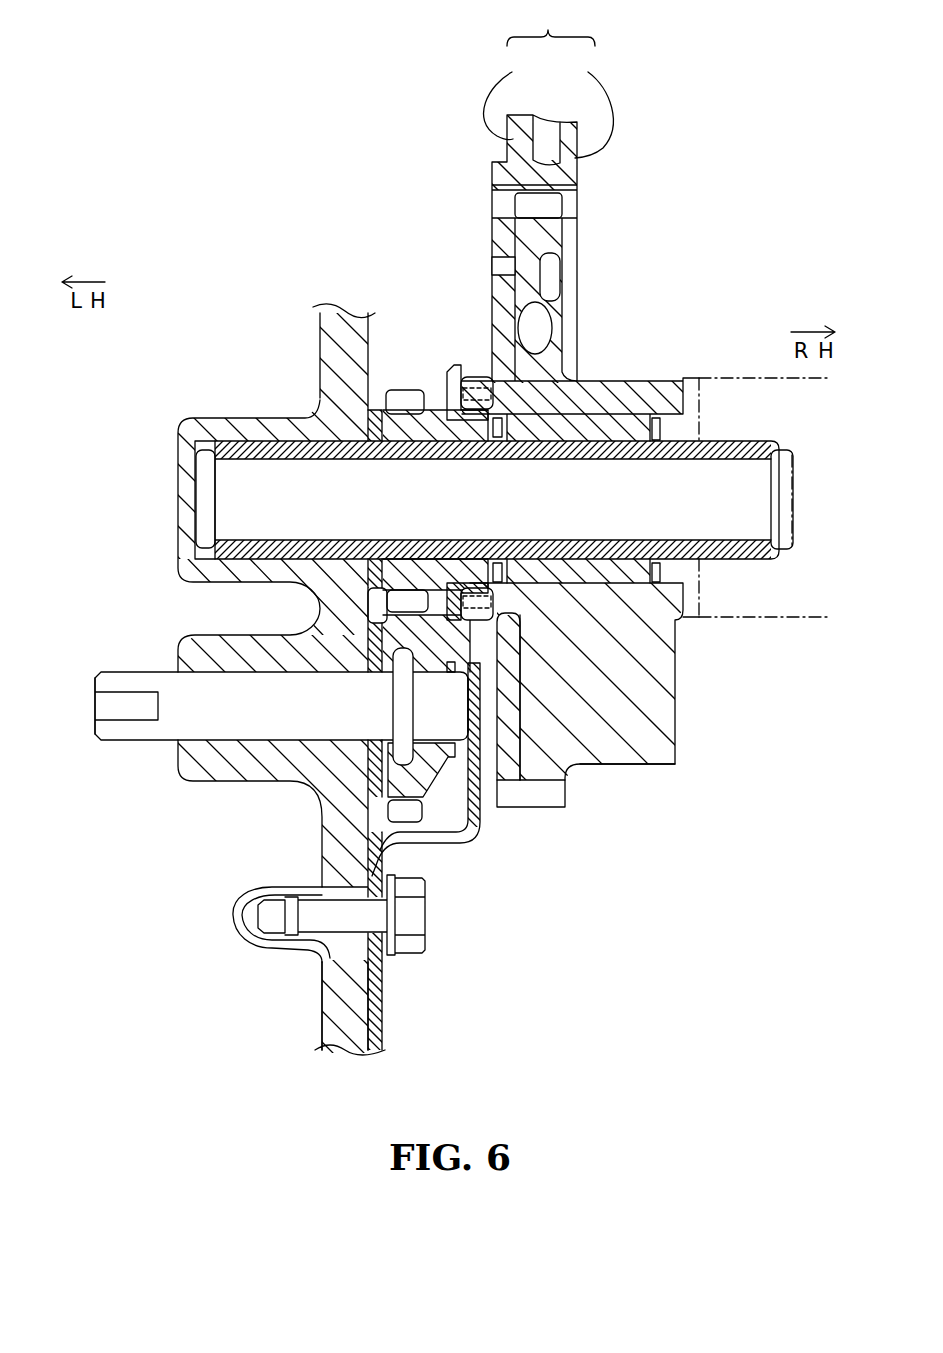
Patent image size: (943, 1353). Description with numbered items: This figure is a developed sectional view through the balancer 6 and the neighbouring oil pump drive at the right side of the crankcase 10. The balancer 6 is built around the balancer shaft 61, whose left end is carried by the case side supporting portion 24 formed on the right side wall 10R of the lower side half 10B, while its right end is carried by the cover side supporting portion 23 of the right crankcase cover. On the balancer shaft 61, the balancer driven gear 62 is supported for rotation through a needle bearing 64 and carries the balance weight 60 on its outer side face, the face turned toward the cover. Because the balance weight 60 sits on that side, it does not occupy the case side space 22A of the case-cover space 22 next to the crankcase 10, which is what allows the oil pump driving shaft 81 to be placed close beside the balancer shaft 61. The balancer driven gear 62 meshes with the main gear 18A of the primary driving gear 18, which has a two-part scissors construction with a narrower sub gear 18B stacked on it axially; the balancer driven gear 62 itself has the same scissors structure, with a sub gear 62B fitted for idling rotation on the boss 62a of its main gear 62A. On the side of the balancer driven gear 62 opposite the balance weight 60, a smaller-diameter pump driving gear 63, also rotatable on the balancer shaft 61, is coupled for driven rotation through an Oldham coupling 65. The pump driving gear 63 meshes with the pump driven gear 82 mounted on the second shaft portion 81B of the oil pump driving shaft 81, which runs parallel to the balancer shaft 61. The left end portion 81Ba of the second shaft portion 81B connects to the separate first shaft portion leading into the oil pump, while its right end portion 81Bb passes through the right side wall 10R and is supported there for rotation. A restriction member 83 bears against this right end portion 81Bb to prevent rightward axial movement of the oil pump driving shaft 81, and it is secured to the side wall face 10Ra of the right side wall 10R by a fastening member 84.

The balancer 6 is at (698, 665).
The crankcase 10 is at (279, 633).
The lower side half 10B is at (345, 310).
The right side wall 10R is at (370, 357).
The side wall face 10Ra is at (382, 982).
The primary driving gear 18 is at (551, 26).
The main gear 18A is at (508, 95).
The sub gear 18B is at (589, 104).
The case-cover space 22 is at (627, 276).
The case side space 22A is at (427, 357).
The cover side supporting portion 23 is at (729, 378).
The case side supporting portion 24 is at (258, 418).
The balance weight 60 is at (645, 765).
The balancer shaft 61 is at (731, 441).
The balancer driven gear 62 is at (506, 778).
The main gear 62A is at (552, 808).
The sub gear 62B is at (510, 808).
The boss 62a is at (603, 742).
The pump driving gear 63 is at (405, 390).
The needle bearing 64 is at (612, 425).
The Oldham coupling 65 is at (481, 360).
The oil pump driving shaft 81 is at (270, 768).
The second shaft portion 81B is at (223, 742).
The left end portion 81Ba is at (123, 742).
The right end portion 81Bb is at (437, 727).
The pump driven gear 82 is at (390, 800).
The restriction member 83 is at (474, 843).
The fastening member 84 is at (428, 935).